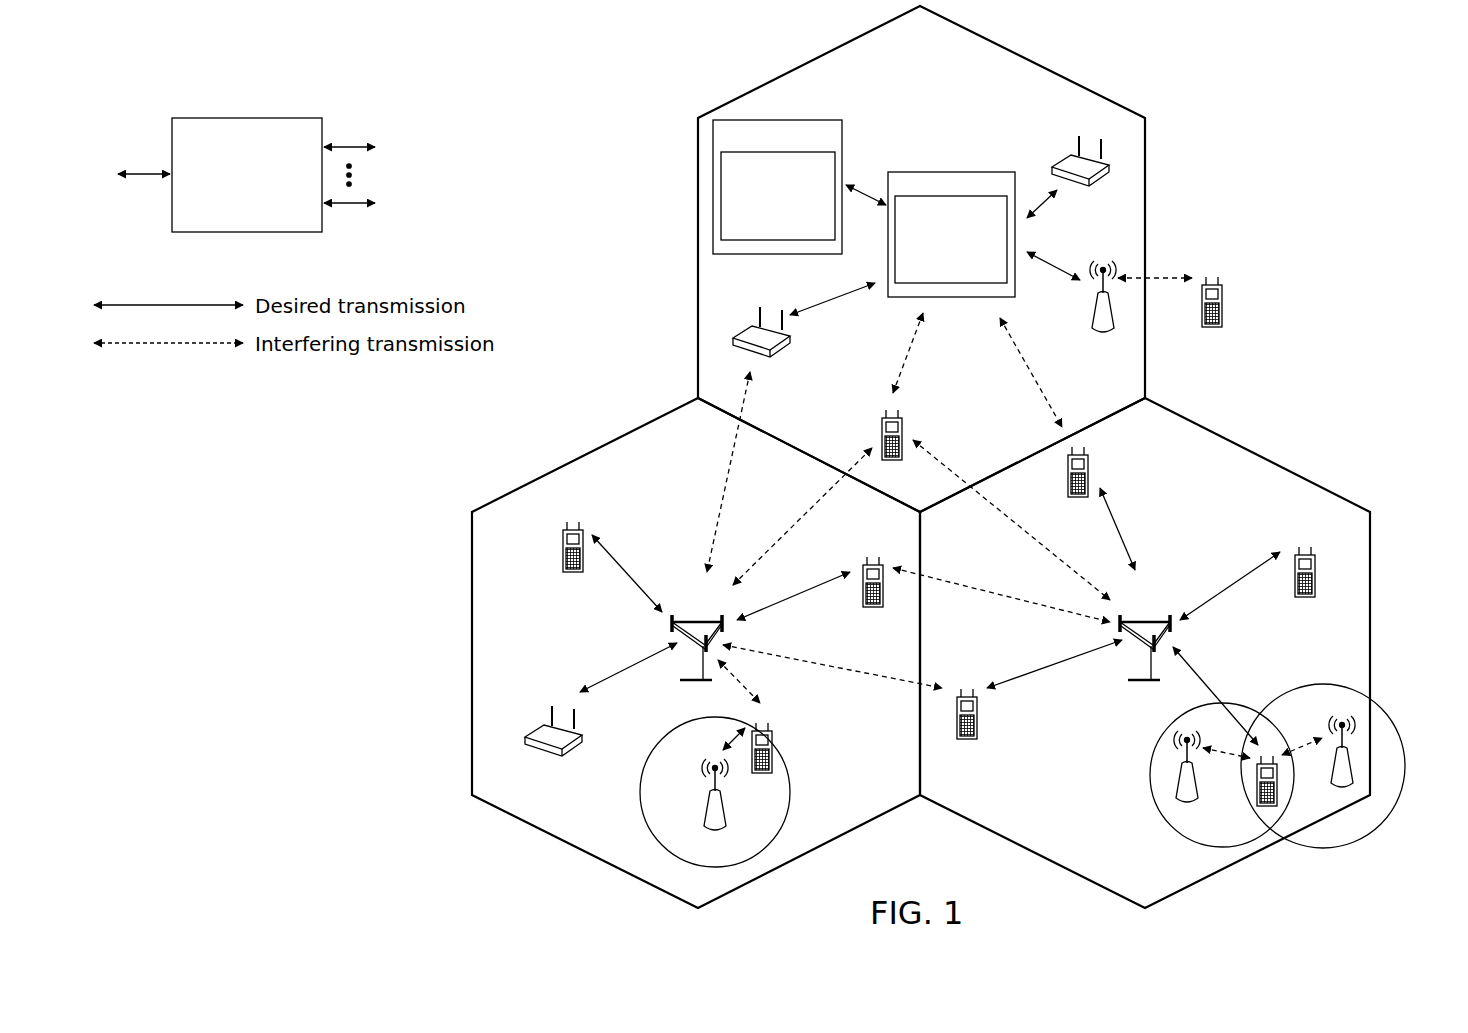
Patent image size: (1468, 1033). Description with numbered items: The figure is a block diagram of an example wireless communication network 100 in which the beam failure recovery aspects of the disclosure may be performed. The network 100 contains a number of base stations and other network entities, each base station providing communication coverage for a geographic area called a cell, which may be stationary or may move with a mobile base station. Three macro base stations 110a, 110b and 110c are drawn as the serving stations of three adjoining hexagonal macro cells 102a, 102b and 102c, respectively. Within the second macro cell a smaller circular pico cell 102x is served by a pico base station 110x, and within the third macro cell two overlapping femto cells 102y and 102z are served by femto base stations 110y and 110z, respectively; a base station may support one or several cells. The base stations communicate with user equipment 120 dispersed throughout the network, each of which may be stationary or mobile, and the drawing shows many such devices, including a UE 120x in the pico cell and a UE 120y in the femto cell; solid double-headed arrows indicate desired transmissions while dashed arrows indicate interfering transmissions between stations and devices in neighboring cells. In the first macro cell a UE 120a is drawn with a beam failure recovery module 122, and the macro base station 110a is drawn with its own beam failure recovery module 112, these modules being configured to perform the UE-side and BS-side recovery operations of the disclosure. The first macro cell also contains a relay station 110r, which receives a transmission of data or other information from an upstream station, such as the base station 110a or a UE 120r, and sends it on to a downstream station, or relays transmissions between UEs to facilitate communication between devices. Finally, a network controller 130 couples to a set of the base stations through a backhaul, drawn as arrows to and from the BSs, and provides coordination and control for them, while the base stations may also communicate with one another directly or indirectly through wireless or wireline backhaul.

The wireless communication network 100 is at (1298, 75).
The network controller 130 is at (244, 118).
The macro cell 102a is at (1046, 64).
The macro cell 102b is at (580, 457).
The macro cell 102c is at (1276, 443).
The user equipment 120a is at (822, 119).
The beam failure recovery module 122 is at (838, 163).
The macro base station 110a is at (988, 172).
The beam failure recovery module 112 is at (895, 280).
The relay station 110r is at (1091, 318).
The user equipment 120r is at (1226, 312).
The user equipment 120 is at (750, 326).
The macro base station 110b is at (707, 604).
The macro base station 110c is at (1154, 604).
The pico cell 102x is at (662, 735).
The pico base station 110x is at (723, 818).
The user equipment 120x is at (788, 724).
The femto cell 102y is at (1152, 738).
The femto base station 110y is at (1196, 790).
The user equipment 120y is at (1258, 800).
The femto cell 102z is at (1328, 684).
The femto base station 110z is at (1350, 780).